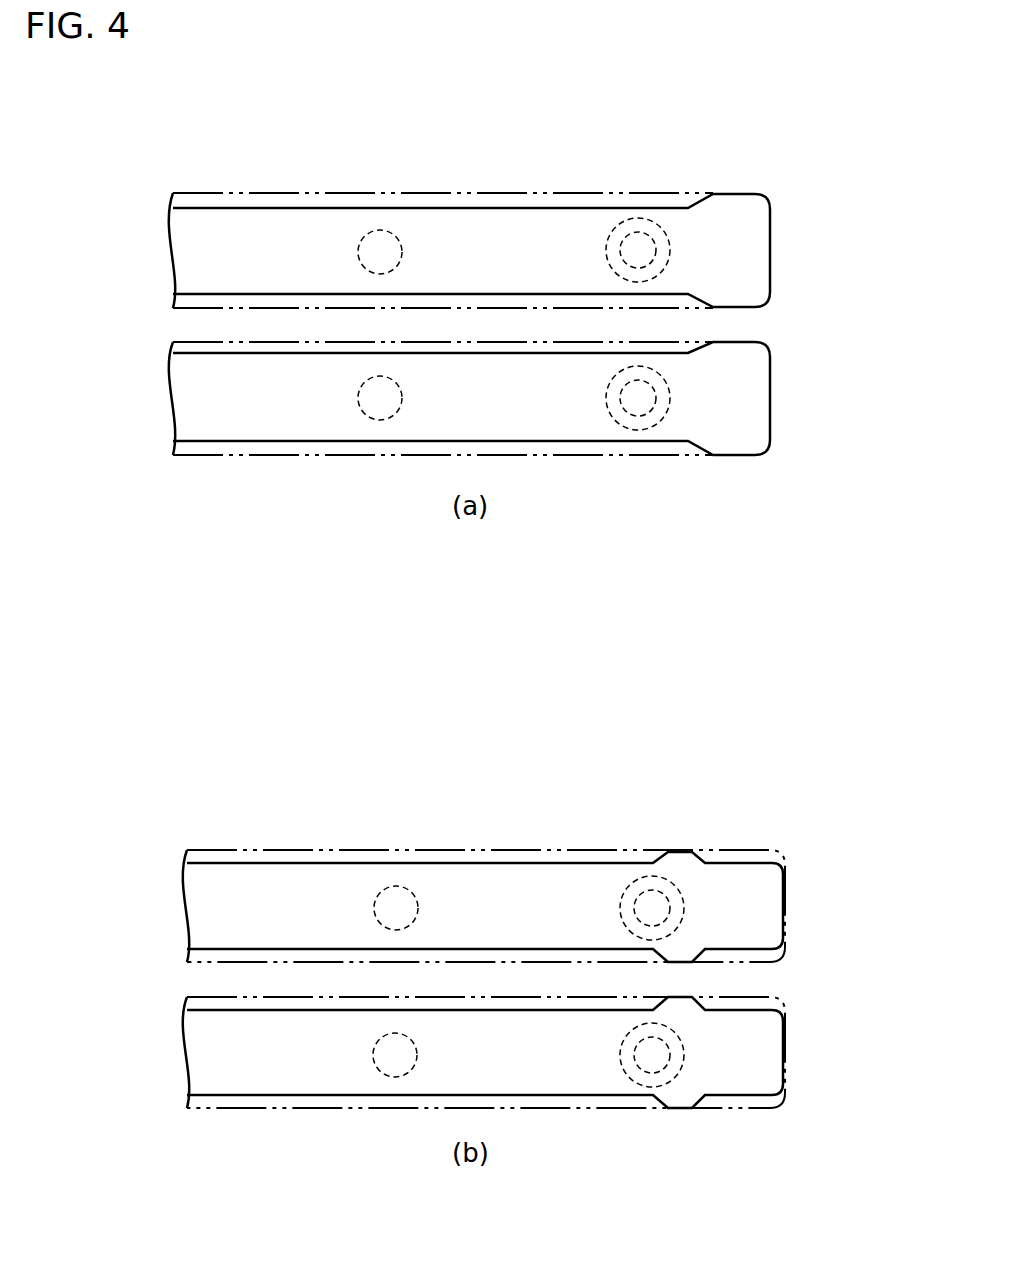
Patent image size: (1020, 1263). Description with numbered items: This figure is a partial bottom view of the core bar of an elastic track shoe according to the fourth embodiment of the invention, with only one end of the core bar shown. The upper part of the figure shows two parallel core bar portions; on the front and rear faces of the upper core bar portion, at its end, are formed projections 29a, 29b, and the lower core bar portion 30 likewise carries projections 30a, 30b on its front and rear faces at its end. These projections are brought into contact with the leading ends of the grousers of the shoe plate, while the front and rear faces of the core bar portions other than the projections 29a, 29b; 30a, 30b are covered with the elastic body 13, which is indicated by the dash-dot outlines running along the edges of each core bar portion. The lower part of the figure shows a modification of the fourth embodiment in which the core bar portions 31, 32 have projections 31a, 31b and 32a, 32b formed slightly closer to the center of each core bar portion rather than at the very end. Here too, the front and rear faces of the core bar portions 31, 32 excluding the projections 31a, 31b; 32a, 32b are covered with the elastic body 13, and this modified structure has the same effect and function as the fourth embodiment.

The elastic body 13 is at (430, 193).
The projection 29a is at (737, 196).
The projection 29b is at (741, 309).
The core bar portion 30 is at (511, 410).
The projection 30a is at (742, 341).
The projection 30b is at (740, 456).
The core bar portion 31 is at (521, 874).
The projection 31a is at (685, 855).
The projection 31b is at (685, 958).
The core bar portion 32 is at (518, 1070).
The projection 32a is at (681, 1002).
The projection 32b is at (683, 1102).